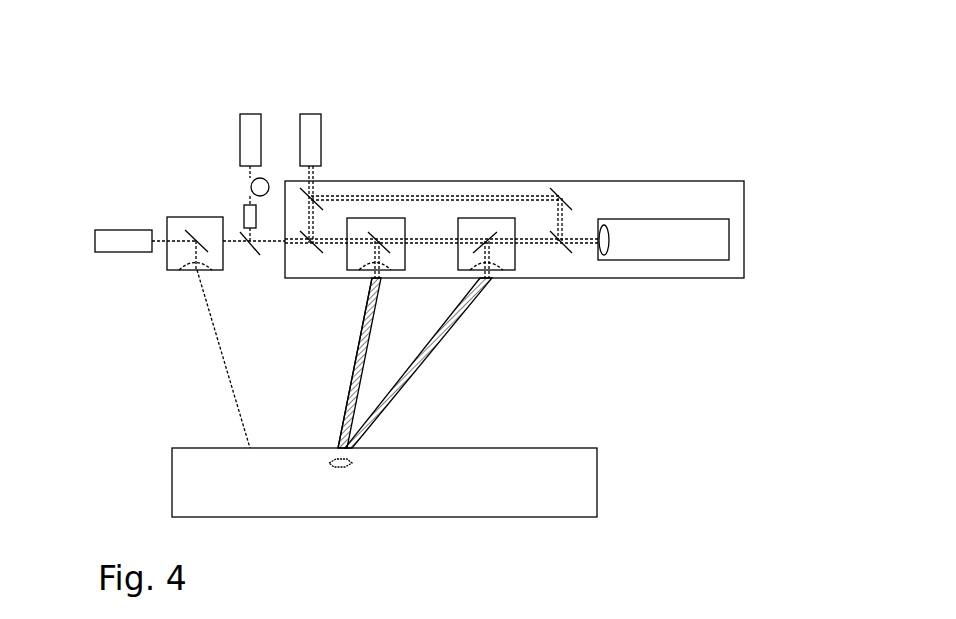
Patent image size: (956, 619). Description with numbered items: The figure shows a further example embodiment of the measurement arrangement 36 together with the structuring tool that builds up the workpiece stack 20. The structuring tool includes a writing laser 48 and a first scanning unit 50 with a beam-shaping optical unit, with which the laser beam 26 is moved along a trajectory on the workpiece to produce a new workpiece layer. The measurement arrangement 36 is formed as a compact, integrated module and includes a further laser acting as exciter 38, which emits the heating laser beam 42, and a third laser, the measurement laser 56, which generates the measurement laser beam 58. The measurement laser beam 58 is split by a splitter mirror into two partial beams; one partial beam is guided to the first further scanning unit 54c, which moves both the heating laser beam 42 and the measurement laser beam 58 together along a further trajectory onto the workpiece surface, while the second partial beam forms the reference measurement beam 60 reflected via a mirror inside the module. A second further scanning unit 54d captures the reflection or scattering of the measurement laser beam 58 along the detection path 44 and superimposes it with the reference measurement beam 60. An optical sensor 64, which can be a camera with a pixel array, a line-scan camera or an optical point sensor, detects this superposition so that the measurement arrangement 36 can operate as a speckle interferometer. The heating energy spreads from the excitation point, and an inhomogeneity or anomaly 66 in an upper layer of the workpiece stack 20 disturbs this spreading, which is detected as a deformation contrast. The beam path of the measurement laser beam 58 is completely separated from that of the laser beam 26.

The workpiece stack 20 is at (597, 462).
The laser beam 26 is at (221, 355).
The measurement arrangement 36 is at (700, 95).
The exciter 38 is at (250, 112).
The laser beam 42 is at (343, 397).
The detection path 44 is at (418, 360).
The laser 48 is at (103, 230).
The first scanning unit 50 is at (178, 217).
The first further scanning unit 54c is at (340, 268).
The second further scanning unit 54d is at (515, 270).
The measurement laser 56 is at (308, 113).
The measurement laser beam 58 is at (375, 325).
The reference measurement beam 60 is at (467, 190).
The optical sensor 64 is at (720, 239).
The inhomogeneity/anomaly 66 is at (341, 469).